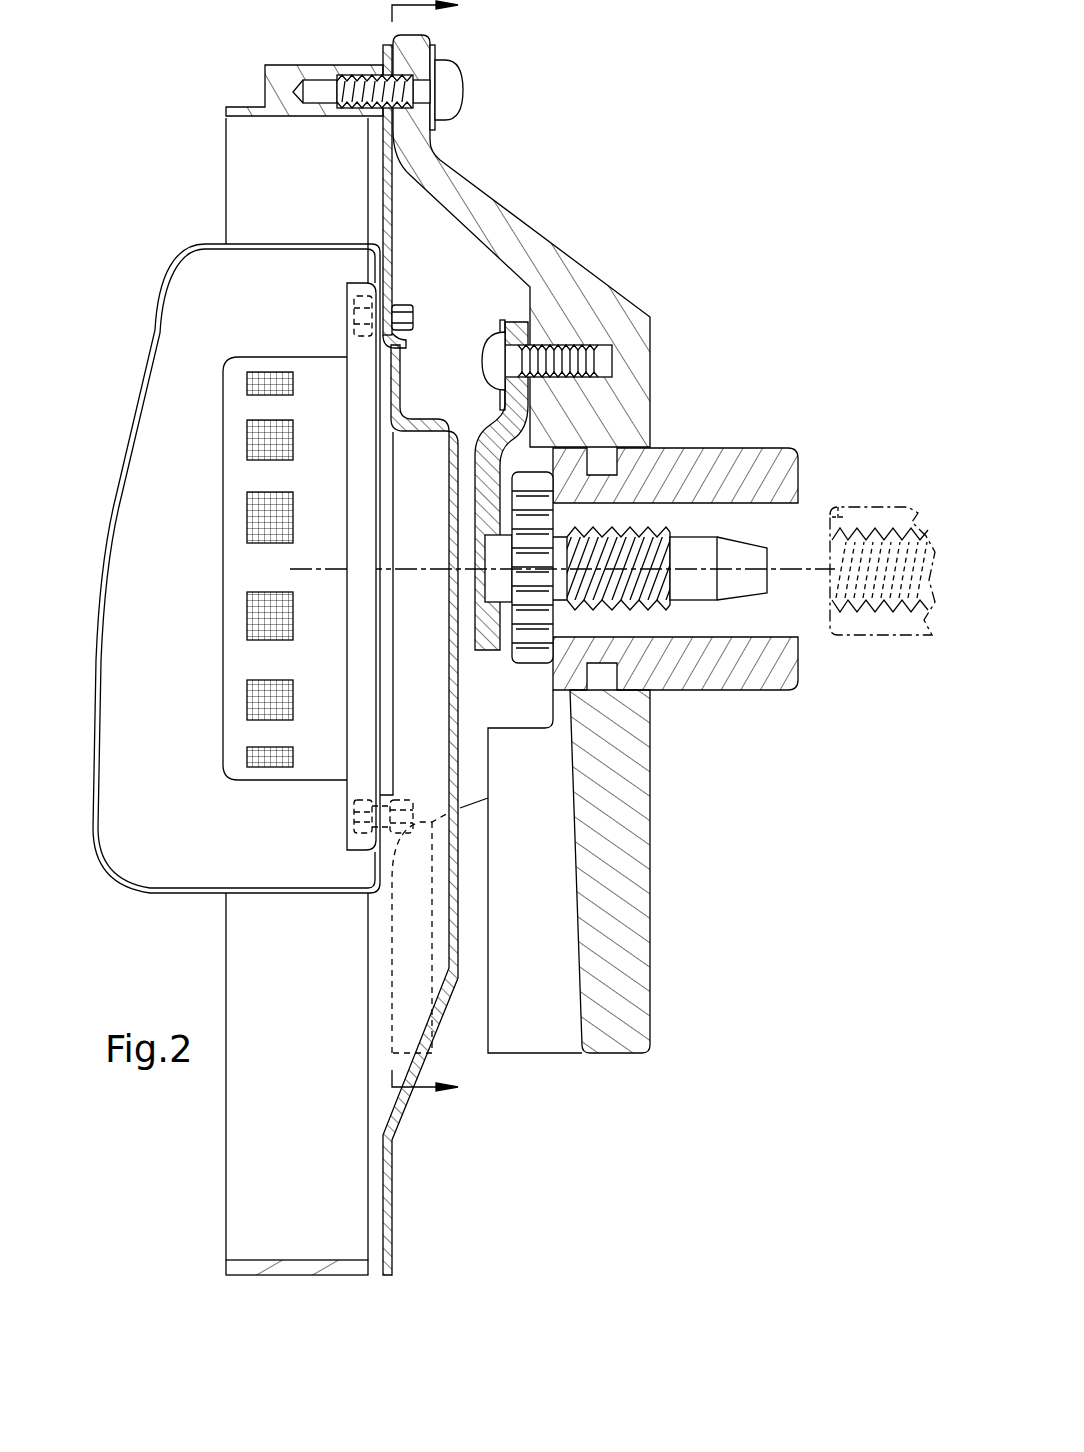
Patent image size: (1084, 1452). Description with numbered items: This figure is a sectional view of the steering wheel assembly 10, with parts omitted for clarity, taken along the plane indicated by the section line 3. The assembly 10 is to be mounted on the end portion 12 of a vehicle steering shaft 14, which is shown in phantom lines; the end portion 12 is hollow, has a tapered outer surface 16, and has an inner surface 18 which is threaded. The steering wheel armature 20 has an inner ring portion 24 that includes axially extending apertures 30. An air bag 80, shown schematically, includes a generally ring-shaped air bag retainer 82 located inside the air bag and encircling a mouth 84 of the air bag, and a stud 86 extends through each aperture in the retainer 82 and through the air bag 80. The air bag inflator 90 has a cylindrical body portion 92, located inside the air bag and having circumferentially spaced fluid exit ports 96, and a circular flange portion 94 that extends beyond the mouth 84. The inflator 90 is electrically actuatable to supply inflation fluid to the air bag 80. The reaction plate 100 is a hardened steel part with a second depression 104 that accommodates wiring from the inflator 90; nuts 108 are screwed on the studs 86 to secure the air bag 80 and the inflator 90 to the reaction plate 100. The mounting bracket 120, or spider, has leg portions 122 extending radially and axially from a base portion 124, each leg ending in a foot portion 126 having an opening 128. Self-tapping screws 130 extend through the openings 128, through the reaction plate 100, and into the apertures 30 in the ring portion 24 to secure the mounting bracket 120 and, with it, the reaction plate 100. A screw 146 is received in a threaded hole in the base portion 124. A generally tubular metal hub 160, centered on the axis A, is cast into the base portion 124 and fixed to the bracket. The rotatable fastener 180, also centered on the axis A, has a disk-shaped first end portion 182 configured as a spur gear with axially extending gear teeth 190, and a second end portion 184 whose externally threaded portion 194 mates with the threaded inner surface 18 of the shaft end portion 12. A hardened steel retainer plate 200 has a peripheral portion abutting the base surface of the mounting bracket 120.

The section line of FIG. 3 is at (436, 550).
The steering wheel assembly 10 is at (608, 176).
The end portion 12 is at (843, 516).
The vehicle steering shaft 14 is at (897, 569).
The tapered outer surface 16 is at (893, 635).
The inner surface 18 is at (853, 610).
The steering wheel armature 20 is at (259, 654).
The ring portion 24 is at (270, 66).
The axially extending apertures 30 is at (408, 70).
The air bag 80 is at (164, 278).
The air bag retainer 82 is at (346, 525).
The mouth 84 is at (428, 322).
The stud 86 is at (349, 318).
The air bag inflator 90 is at (257, 531).
The body portion 92 is at (236, 388).
The flange portion 94 is at (392, 397).
The fluid exit ports 96 is at (262, 520).
The reaction plate 100 is at (452, 660).
The second depression 104 is at (445, 503).
The nuts 108 is at (402, 303).
The mounting bracket 120 is at (572, 541).
The leg portions 122 is at (521, 238).
The base portion 124 is at (634, 410).
The foot portion 126 is at (420, 38).
The opening 128 is at (436, 63).
The self-tapping screws 130 is at (452, 100).
The screw 146 is at (605, 362).
The hub 160 is at (685, 611).
The rotatable fastener 180 is at (664, 651).
The first end portion 182 is at (528, 476).
The second end portion 184 is at (620, 608).
The gear teeth 190 is at (641, 513).
The threaded portion 194 is at (648, 610).
The retainer plate 200 is at (510, 312).
The axis A is at (781, 568).